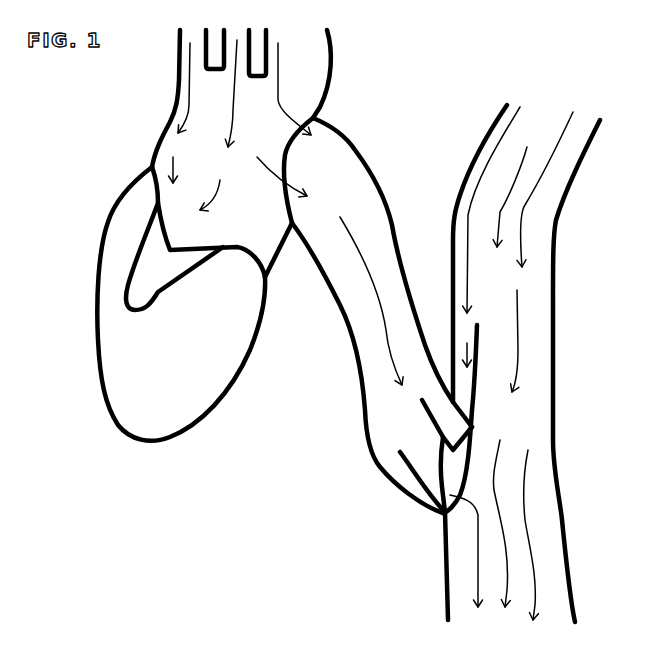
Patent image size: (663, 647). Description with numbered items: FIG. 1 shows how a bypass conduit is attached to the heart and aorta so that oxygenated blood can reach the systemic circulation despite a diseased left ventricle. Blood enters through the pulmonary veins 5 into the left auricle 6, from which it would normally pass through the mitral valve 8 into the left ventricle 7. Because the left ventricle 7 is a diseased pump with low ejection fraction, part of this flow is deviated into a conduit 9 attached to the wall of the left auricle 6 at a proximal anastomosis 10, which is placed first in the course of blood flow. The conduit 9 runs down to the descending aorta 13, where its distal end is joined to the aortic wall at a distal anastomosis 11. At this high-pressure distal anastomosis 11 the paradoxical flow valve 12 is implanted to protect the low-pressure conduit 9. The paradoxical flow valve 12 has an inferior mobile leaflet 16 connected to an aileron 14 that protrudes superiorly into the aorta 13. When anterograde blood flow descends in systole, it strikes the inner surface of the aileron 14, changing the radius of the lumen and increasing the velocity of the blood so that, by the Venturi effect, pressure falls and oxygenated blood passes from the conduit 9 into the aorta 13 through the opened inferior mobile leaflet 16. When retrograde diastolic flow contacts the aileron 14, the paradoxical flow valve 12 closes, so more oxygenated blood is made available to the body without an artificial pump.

The pulmonary veins 5 is at (243, 53).
The left auricle 6 is at (190, 143).
The left ventricle 7 is at (123, 373).
The mitral valve 8 is at (163, 222).
The conduit 9 is at (352, 143).
The proximal anastomosis 10 is at (292, 140).
The distal anastomosis 11 is at (443, 513).
The paradoxical flow valve 12 is at (452, 449).
The aorta 13 is at (553, 303).
The aileron 14 is at (456, 412).
The inferior mobile leaflet 16 is at (429, 412).